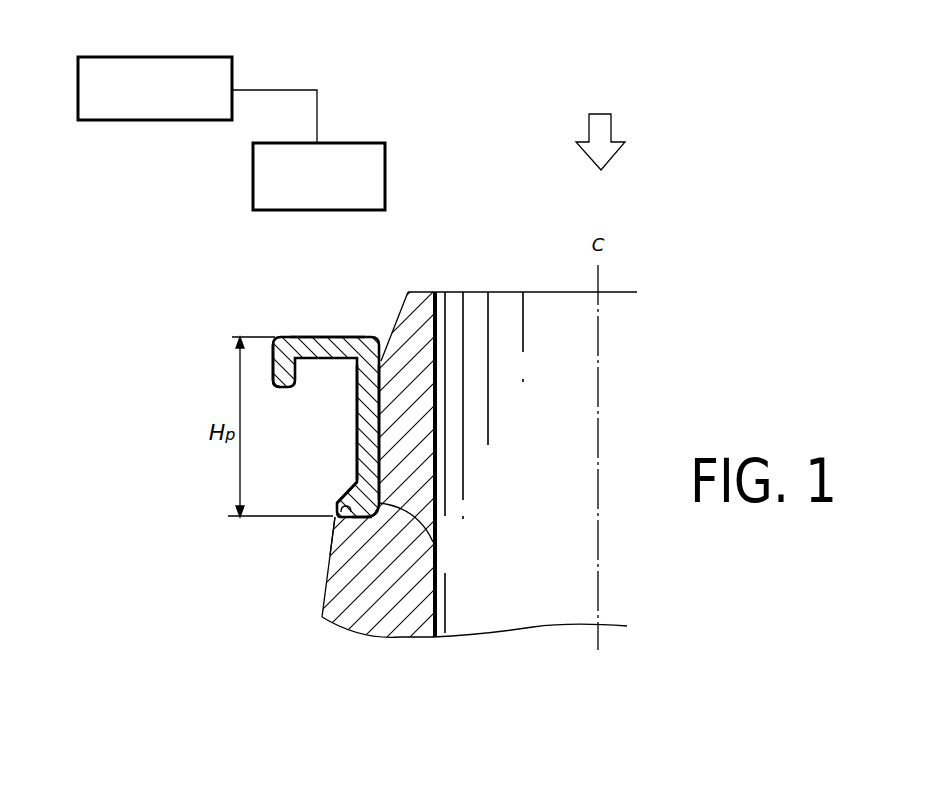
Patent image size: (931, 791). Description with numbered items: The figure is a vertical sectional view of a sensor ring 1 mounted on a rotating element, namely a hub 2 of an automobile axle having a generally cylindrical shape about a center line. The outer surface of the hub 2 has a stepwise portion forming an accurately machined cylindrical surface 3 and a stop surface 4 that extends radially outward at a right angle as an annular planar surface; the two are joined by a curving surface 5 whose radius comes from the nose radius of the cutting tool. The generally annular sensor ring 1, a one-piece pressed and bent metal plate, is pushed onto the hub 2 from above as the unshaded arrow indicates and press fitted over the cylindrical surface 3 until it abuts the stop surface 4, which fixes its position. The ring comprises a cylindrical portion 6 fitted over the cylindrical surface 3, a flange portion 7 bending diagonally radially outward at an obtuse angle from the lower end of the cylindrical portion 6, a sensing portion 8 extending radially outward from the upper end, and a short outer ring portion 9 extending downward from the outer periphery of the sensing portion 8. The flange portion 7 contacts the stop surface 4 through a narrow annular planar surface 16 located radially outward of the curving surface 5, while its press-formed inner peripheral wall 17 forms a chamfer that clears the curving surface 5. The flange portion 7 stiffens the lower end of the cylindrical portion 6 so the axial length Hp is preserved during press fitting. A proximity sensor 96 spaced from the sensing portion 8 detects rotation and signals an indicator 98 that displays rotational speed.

The sensor ring 1 is at (345, 307).
The hub 2 is at (498, 293).
The cylindrical surface 3 is at (377, 427).
The stop surface 4 is at (335, 507).
The curving surface 5 is at (360, 517).
The cylindrical portion 6 is at (367, 398).
The flange portion 7 is at (345, 493).
The sensing portion 8 is at (313, 347).
The outer ring portion 9 is at (278, 368).
The annular planar surface 16 is at (332, 537).
The inner peripheral wall 17 is at (436, 545).
The proximity sensor 96 is at (333, 143).
The indicator 98 is at (140, 57).